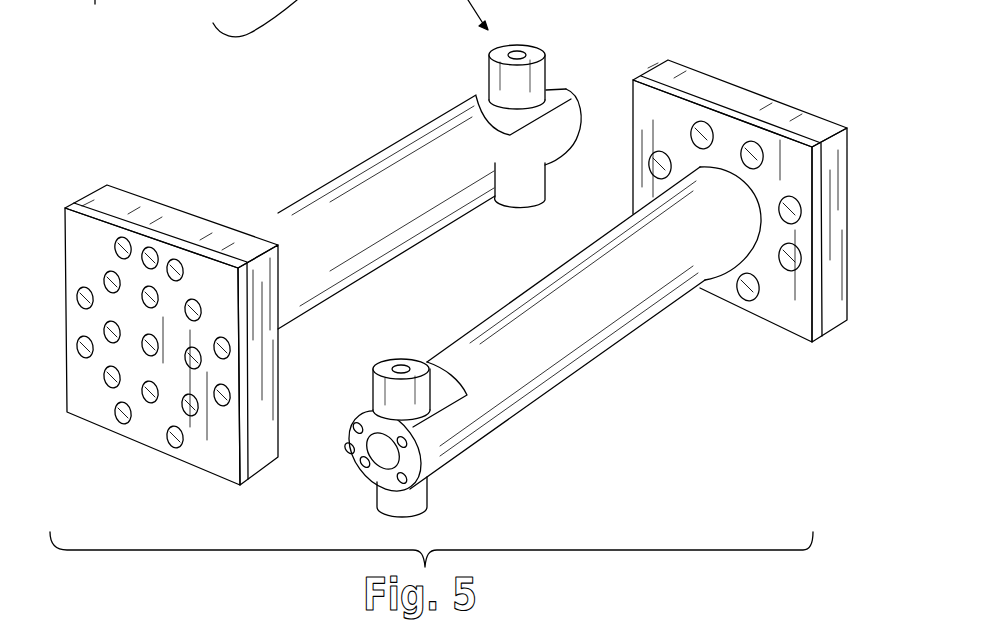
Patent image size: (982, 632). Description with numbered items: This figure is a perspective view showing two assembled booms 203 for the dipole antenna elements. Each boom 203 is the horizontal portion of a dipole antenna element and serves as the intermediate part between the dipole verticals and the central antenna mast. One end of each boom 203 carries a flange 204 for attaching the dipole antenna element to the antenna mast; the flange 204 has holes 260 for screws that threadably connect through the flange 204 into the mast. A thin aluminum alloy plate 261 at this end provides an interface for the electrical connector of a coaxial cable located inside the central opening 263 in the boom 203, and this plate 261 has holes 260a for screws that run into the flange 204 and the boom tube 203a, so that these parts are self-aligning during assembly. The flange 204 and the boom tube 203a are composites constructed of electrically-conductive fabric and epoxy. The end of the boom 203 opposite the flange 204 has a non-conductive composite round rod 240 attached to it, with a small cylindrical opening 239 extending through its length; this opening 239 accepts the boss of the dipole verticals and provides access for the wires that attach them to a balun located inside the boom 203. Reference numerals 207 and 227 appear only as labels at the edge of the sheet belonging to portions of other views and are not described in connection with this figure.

The boom 203 is at (398, 216).
The boom tube 203a is at (355, 443).
The flange 204 is at (160, 217).
The frame member 207 is at (93, 16).
The curved member 227 is at (252, 18).
The small cylindrical opening 239 is at (518, 47).
The non-conductive composite round rod 240 is at (484, 227).
The holes 260 is at (786, 272).
The holes 260a is at (107, 372).
The thin aluminum alloy plate 261 is at (183, 240).
The central opening 263 is at (382, 462).